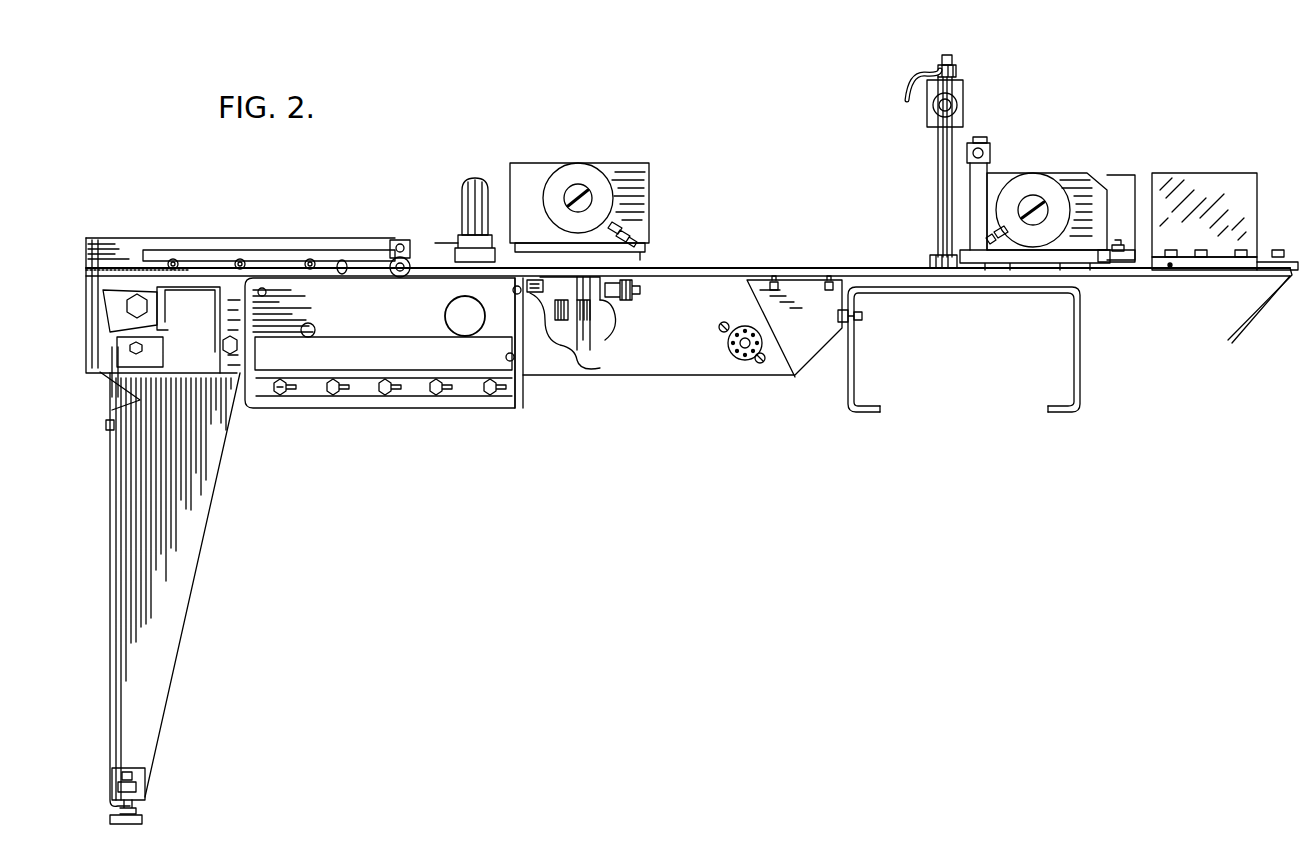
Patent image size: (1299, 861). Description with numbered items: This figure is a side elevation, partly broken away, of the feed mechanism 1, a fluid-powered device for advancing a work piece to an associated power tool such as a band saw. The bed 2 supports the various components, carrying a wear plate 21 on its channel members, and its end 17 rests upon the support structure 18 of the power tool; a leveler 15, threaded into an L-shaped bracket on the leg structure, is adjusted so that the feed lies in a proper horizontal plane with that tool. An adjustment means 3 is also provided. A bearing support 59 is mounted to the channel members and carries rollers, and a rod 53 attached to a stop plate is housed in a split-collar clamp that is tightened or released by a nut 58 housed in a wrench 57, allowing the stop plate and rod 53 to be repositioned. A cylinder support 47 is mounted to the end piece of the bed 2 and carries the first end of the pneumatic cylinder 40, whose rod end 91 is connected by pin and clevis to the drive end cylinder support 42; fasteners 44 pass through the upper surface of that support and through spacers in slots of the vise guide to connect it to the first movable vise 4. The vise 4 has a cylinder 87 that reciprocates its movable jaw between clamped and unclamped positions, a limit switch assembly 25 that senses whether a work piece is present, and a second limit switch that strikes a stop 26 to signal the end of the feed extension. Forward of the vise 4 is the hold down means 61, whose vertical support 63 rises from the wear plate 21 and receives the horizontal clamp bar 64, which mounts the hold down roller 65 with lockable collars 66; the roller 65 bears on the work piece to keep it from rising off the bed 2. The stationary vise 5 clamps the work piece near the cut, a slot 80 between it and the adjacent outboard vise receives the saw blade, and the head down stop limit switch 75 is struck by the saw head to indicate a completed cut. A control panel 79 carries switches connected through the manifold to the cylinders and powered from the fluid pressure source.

The feed mechanism 1 is at (733, 165).
The bed 2 is at (690, 362).
The adjustment means 3 is at (455, 236).
The first movable vise 4 is at (620, 163).
The stationary vise 5 is at (1068, 166).
The leveler 15 is at (146, 822).
The end 17 is at (1090, 278).
The support structure 18 is at (1033, 364).
The wear plate 21 is at (736, 268).
The limit switch assembly 25 is at (640, 292).
The stop 26 is at (850, 285).
The cylinder 40 is at (168, 297).
The drive end cylinder support 42 is at (575, 345).
The fasteners 44 is at (533, 293).
The cylinder support 47 is at (98, 372).
The rod 53 is at (270, 255).
The wrench 57 is at (358, 266).
The nut 58 is at (400, 256).
The bearing support 59 is at (218, 243).
The hold down means 61 is at (949, 53).
The vertical support 63 is at (940, 173).
The clamp bar 64 is at (962, 92).
The hold down roller 65 is at (928, 100).
The lockable collars 66 is at (960, 66).
The head down stop limit switch 75 is at (990, 162).
The control panel 79 is at (523, 396).
The slot 80 is at (1137, 278).
The cylinder 87 is at (578, 184).
The rod end 91 is at (560, 305).